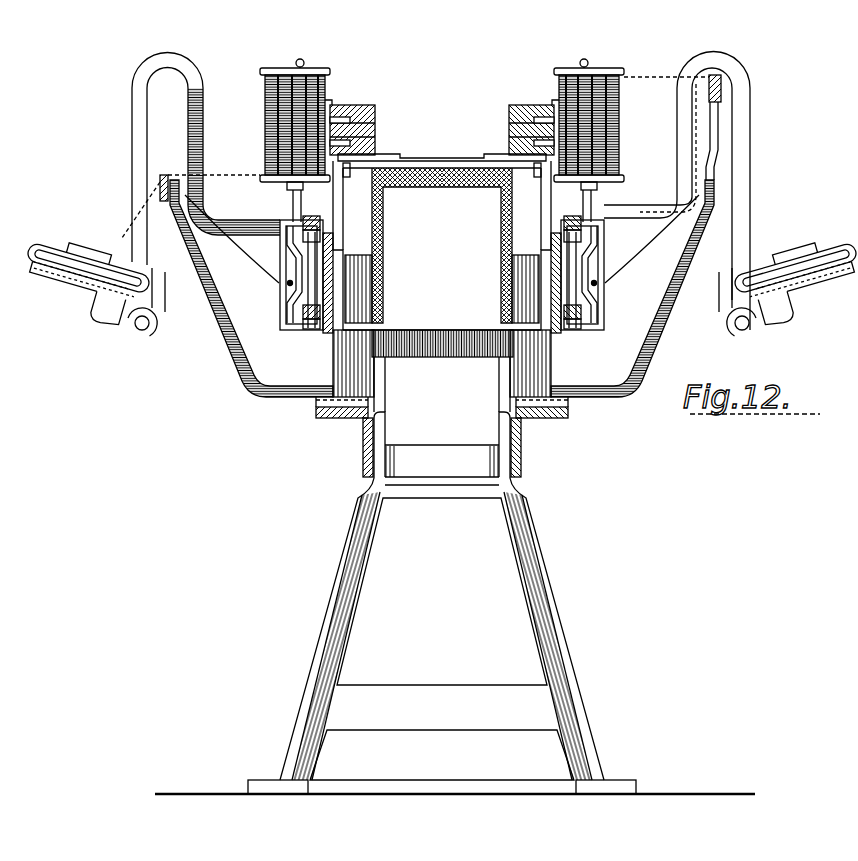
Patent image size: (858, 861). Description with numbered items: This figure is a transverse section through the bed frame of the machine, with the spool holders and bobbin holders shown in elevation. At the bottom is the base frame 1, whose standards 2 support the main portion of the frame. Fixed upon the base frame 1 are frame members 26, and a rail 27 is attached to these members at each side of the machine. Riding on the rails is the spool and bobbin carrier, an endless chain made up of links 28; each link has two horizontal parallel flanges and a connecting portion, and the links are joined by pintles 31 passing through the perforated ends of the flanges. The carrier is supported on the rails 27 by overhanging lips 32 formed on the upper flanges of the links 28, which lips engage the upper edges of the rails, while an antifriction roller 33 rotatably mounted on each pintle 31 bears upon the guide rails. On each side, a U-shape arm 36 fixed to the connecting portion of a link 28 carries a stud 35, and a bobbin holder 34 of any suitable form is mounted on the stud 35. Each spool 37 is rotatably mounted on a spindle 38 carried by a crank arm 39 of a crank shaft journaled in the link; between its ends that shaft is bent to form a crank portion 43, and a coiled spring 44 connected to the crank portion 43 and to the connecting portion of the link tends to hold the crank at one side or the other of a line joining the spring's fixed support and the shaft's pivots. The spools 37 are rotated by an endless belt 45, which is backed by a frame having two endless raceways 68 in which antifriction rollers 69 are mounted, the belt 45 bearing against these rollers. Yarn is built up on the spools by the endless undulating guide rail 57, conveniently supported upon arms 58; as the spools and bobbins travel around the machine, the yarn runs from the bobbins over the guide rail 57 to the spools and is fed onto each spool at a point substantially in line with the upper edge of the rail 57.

The base frame 1 is at (365, 438).
The standards 2 is at (560, 636).
The frame members 26 is at (385, 273).
The rail 27 is at (334, 307).
The link 28 is at (286, 300).
The pintle 31 is at (333, 246).
The overhanging lip 32 is at (320, 225).
The antifriction roller 33 is at (311, 312).
The bobbin holder 34 is at (78, 282).
The stud 35 is at (143, 333).
The U-shape arm 36 is at (133, 128).
The spool 37 is at (270, 68).
The spindle 38 is at (304, 63).
The crank arm 39 is at (303, 206).
The crank portion 43 is at (281, 262).
The coiled spring 44 is at (286, 284).
The endless belt 45 is at (331, 104).
The guide rail 57 is at (164, 176).
The arms 58 is at (218, 360).
The endless raceways 68 is at (400, 158).
The antifriction rollers 69 is at (376, 112).